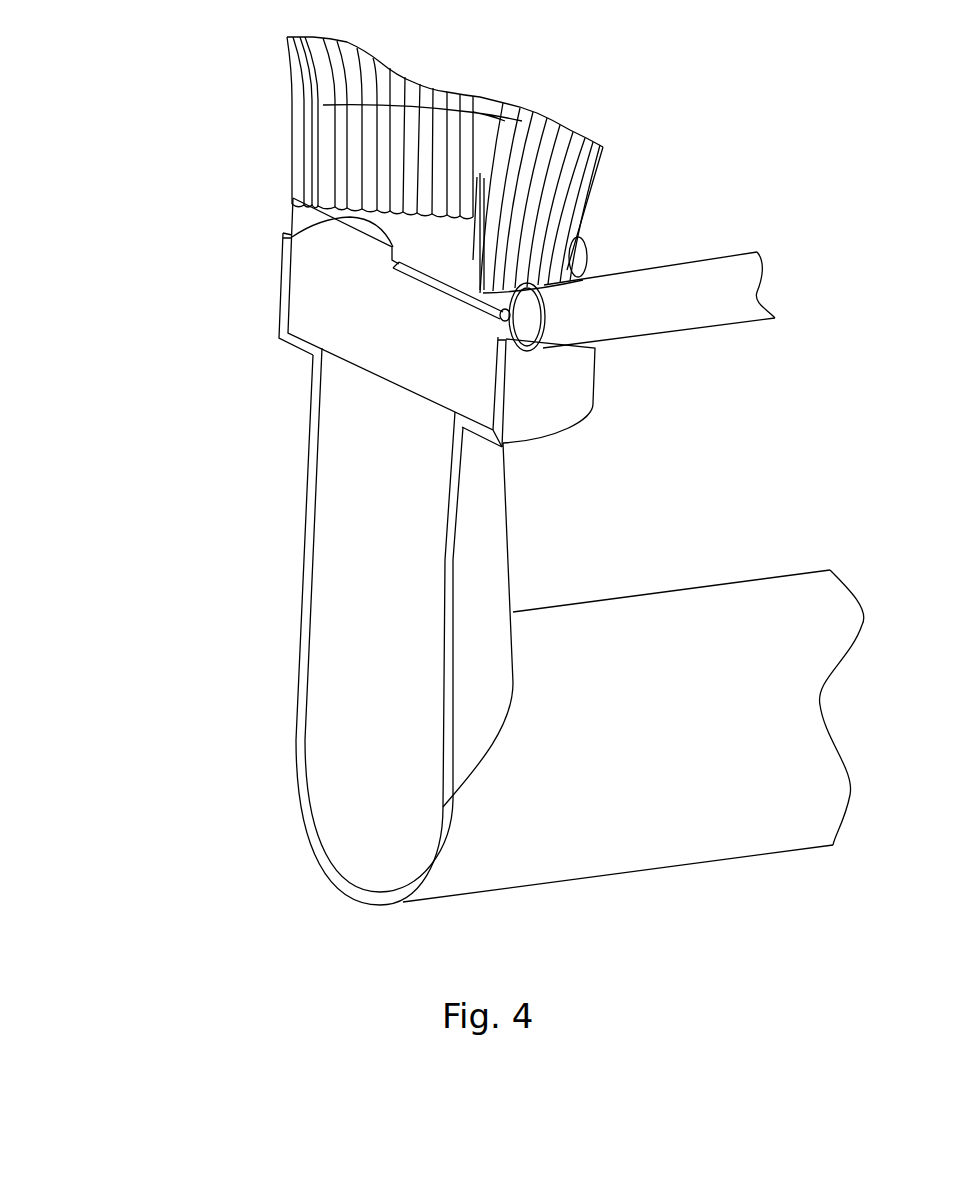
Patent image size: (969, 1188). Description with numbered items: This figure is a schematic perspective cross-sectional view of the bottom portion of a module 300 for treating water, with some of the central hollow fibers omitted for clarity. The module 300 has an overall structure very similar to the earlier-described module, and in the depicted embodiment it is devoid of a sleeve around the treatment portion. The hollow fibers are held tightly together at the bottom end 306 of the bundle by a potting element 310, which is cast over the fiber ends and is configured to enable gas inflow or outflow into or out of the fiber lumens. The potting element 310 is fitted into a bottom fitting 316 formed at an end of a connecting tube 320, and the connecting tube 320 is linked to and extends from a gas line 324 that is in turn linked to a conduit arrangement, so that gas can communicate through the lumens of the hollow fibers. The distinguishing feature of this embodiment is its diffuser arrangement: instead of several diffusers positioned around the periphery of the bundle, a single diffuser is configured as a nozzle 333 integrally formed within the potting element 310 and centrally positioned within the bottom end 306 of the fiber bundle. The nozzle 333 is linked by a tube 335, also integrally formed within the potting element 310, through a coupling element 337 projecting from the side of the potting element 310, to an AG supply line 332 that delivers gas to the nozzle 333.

The module 300 is at (247, 470).
The bottom end 306 is at (572, 172).
The potting element 310 is at (290, 213).
The bottom fitting 316 is at (565, 395).
The connecting tube 320 is at (497, 525).
The gas line 324 is at (723, 760).
The AG supply line 332 is at (700, 303).
The nozzle 333 is at (287, 236).
The tube 335 is at (447, 283).
The coupling element 337 is at (545, 317).